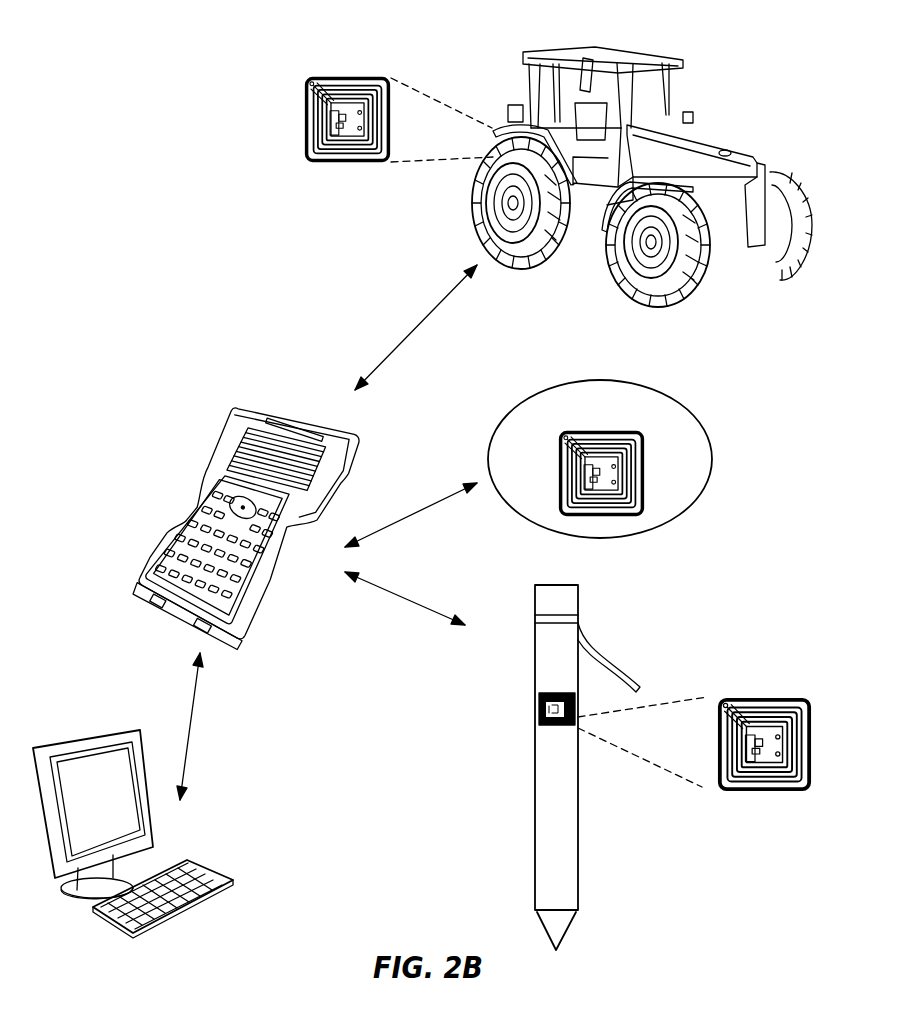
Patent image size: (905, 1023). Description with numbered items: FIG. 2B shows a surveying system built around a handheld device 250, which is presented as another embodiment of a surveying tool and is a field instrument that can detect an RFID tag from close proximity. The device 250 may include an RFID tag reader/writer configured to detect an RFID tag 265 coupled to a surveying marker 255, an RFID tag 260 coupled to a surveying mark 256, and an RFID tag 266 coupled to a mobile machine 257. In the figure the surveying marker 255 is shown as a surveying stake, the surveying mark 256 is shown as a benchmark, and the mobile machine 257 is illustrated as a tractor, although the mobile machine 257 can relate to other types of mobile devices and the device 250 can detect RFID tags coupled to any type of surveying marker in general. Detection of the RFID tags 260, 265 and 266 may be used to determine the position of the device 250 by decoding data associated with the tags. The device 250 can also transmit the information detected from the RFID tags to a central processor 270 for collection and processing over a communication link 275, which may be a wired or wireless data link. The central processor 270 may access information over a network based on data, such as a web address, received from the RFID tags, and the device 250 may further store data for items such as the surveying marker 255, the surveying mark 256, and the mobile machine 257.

The device 250 is at (267, 412).
The surveying marker 255 is at (578, 600).
The surveying mark 256 is at (597, 380).
The mobile machine 257 is at (717, 138).
The RFID tag 260 is at (645, 472).
The RFID tag 265 is at (757, 697).
The RFID tag 266 is at (341, 74).
The central processor 270 is at (85, 755).
The communication link 275 is at (192, 727).